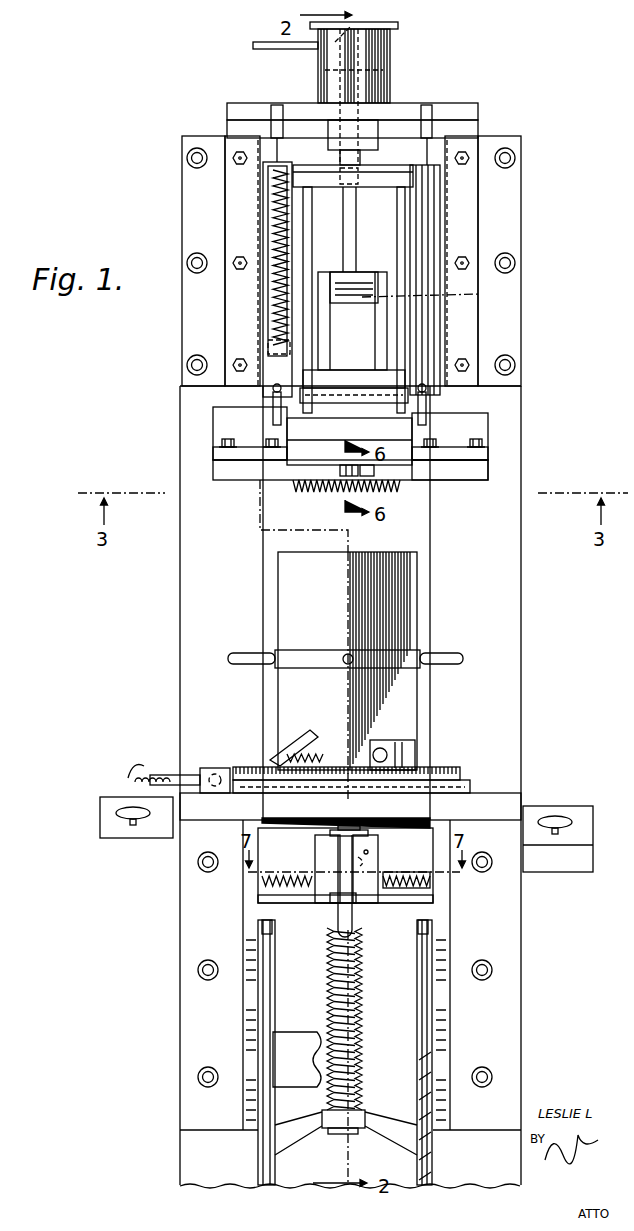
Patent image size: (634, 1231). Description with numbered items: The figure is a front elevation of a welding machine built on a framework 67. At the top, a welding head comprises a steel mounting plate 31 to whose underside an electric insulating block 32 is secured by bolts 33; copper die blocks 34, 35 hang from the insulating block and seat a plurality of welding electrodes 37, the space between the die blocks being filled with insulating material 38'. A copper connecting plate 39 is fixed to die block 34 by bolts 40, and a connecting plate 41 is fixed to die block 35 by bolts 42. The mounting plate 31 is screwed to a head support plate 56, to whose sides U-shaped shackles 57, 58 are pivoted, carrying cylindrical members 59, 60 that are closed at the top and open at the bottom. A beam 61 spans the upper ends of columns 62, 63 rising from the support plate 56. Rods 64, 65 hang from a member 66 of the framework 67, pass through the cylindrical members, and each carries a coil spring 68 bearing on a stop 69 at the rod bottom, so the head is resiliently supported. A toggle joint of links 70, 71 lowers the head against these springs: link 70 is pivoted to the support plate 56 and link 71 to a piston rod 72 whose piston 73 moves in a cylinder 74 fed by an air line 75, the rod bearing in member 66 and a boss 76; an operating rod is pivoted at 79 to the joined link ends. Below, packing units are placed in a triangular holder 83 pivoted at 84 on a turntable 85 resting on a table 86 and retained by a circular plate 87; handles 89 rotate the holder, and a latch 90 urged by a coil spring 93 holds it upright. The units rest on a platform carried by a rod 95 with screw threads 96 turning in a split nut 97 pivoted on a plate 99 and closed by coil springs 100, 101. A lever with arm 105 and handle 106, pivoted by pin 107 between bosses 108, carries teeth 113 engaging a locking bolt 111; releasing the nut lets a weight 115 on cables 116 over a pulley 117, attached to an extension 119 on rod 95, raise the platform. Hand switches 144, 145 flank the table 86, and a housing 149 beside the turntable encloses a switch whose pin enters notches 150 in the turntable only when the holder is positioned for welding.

The mounting plate 31 is at (420, 440).
The insulating block 32 is at (400, 455).
The bolts 33 is at (368, 478).
The die block 34 is at (213, 468).
The die block 35 is at (488, 478).
The welding electrodes 37 is at (320, 493).
The insulating material 38' is at (419, 496).
The connecting plate 39 is at (222, 456).
The bolts 40 is at (266, 443).
The connecting plate 41 is at (488, 455).
The bolts 42 is at (482, 443).
The head support plate 56 is at (290, 435).
The shackle 57 is at (272, 406).
The shackle 58 is at (428, 410).
The cylindrical member 59 is at (278, 290).
The cylindrical member 60 is at (432, 304).
The beam 61 is at (395, 176).
The column 62 is at (306, 238).
The column 63 is at (401, 238).
The rod 64 is at (283, 145).
The rod 65 is at (440, 156).
The member 66 is at (418, 110).
The framework 67 is at (180, 610).
The coil spring 68 is at (268, 222).
The stop 69 is at (268, 350).
The link 70 is at (380, 344).
The link 71 is at (338, 266).
The piston rod 72 is at (432, 112).
The piston 73 is at (375, 68).
The cylinder 74 is at (391, 47).
The air line 75 is at (262, 42).
The boss 76 is at (330, 133).
The pivot connection 79 is at (431, 293).
The holder 83 is at (418, 577).
The pivot 84 is at (412, 756).
The turntable 85 is at (462, 773).
The table 86 is at (500, 800).
The circular plate 87 is at (262, 823).
The handle 89 is at (346, 655).
The latch 90 is at (298, 744).
The coil spring 93 is at (314, 755).
The rod 95 is at (362, 1034).
The screw threads 96 is at (362, 1000).
The split nut 97 is at (305, 897).
The plate 99 is at (312, 902).
The coil spring 100 is at (262, 882).
The coil spring 101 is at (425, 882).
The lever arm 105 is at (315, 864).
The handle 106 is at (353, 908).
The pin 107 is at (378, 864).
The bosses 108 is at (330, 834).
The locking bolt 111 is at (418, 892).
The teeth 113 is at (326, 900).
The weight 115 is at (292, 1032).
The cables 116 is at (275, 972).
The pulley 117 is at (275, 928).
The extension 119 is at (288, 1140).
The hand operated switch 144 is at (105, 797).
The hand operated switch 145 is at (582, 806).
The housing 149 is at (218, 768).
The notches 150 is at (490, 795).